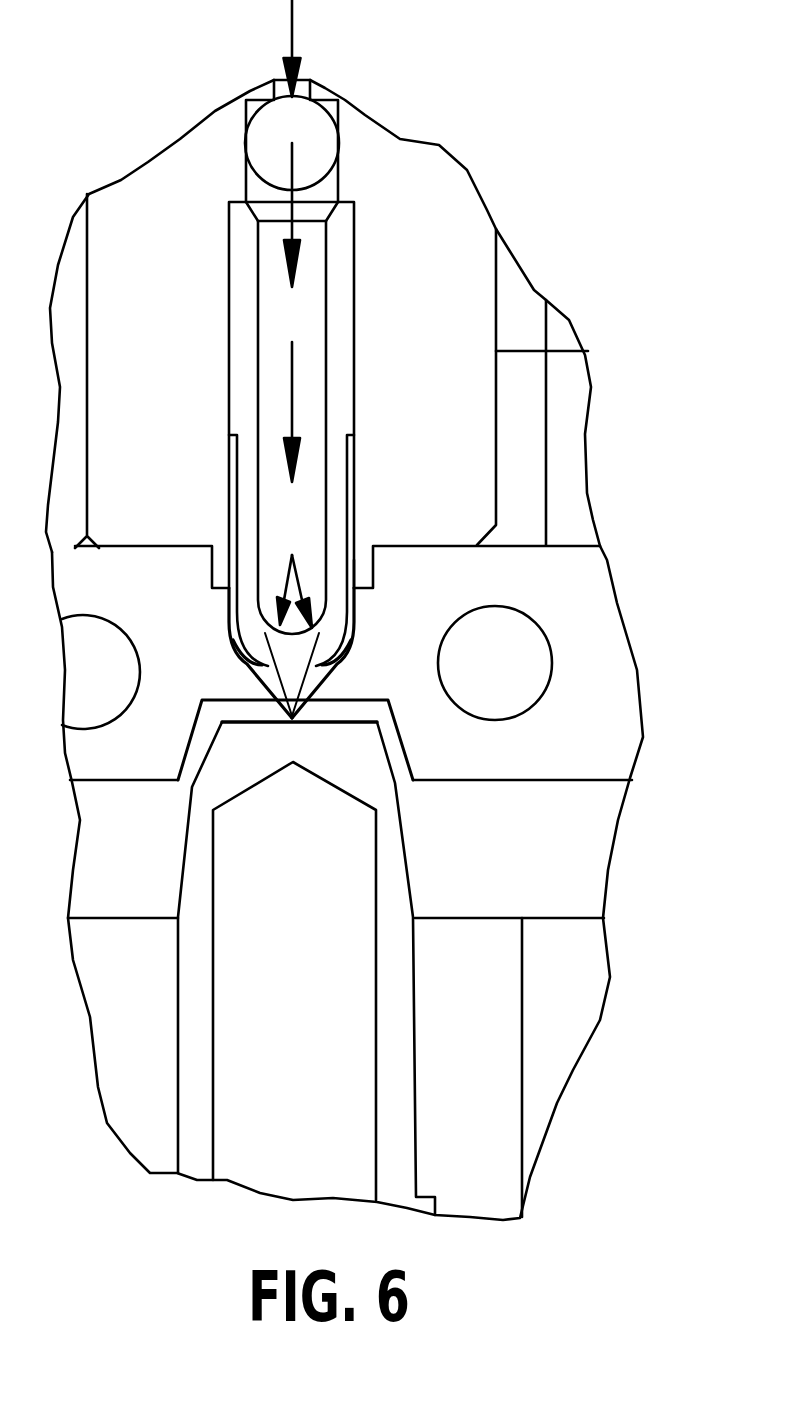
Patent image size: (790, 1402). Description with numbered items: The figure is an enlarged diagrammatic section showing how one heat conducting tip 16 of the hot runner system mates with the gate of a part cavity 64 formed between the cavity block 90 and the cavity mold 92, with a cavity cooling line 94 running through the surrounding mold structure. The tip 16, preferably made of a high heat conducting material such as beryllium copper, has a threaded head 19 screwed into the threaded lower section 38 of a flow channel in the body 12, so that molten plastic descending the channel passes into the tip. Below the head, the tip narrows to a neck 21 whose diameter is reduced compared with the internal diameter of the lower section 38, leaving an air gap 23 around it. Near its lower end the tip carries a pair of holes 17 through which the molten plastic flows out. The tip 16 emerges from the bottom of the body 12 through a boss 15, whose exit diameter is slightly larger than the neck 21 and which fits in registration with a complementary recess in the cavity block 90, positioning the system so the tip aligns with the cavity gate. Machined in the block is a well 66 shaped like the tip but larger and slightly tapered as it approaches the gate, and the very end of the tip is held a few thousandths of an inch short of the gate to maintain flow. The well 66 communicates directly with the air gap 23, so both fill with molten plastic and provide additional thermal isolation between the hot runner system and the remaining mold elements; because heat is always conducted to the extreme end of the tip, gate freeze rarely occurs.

The body 12 is at (425, 178).
The boss 15 is at (367, 563).
The heat conducting tip 16 is at (362, 355).
The holes 17 is at (242, 672).
The threaded head 19 is at (340, 258).
The neck 21 is at (233, 495).
The air gap 23 is at (357, 472).
The lower section 38 is at (320, 137).
The cavity 64 is at (360, 708).
The well 66 is at (228, 618).
The cavity block 90 is at (595, 607).
The cavity mold 92 is at (390, 888).
The cavity cooling line 94 is at (552, 672).